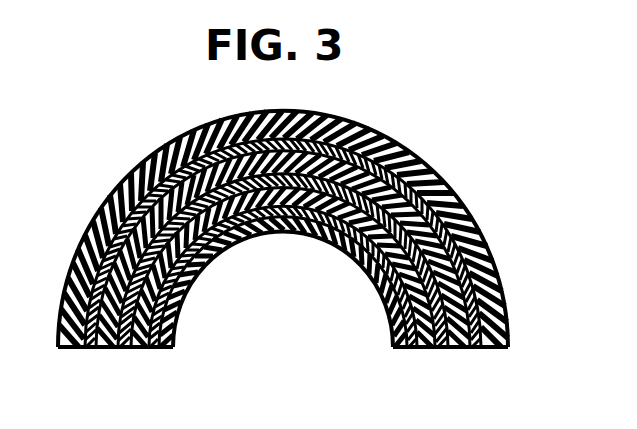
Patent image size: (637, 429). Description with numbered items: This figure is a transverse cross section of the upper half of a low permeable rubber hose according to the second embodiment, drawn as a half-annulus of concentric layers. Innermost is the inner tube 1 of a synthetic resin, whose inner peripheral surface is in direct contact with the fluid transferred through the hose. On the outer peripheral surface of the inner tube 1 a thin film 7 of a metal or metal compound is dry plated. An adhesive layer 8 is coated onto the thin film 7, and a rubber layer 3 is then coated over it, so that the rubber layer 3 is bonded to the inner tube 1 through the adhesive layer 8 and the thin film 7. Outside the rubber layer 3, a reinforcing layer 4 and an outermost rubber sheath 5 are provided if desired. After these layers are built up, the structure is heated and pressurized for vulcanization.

The inner tube 1 is at (158, 348).
The rubber layer 3 is at (450, 348).
The reinforcing layer 4 is at (95, 348).
The rubber sheath 5 is at (493, 348).
The thin film 7 is at (417, 348).
The adhesive layer 8 is at (125, 348).